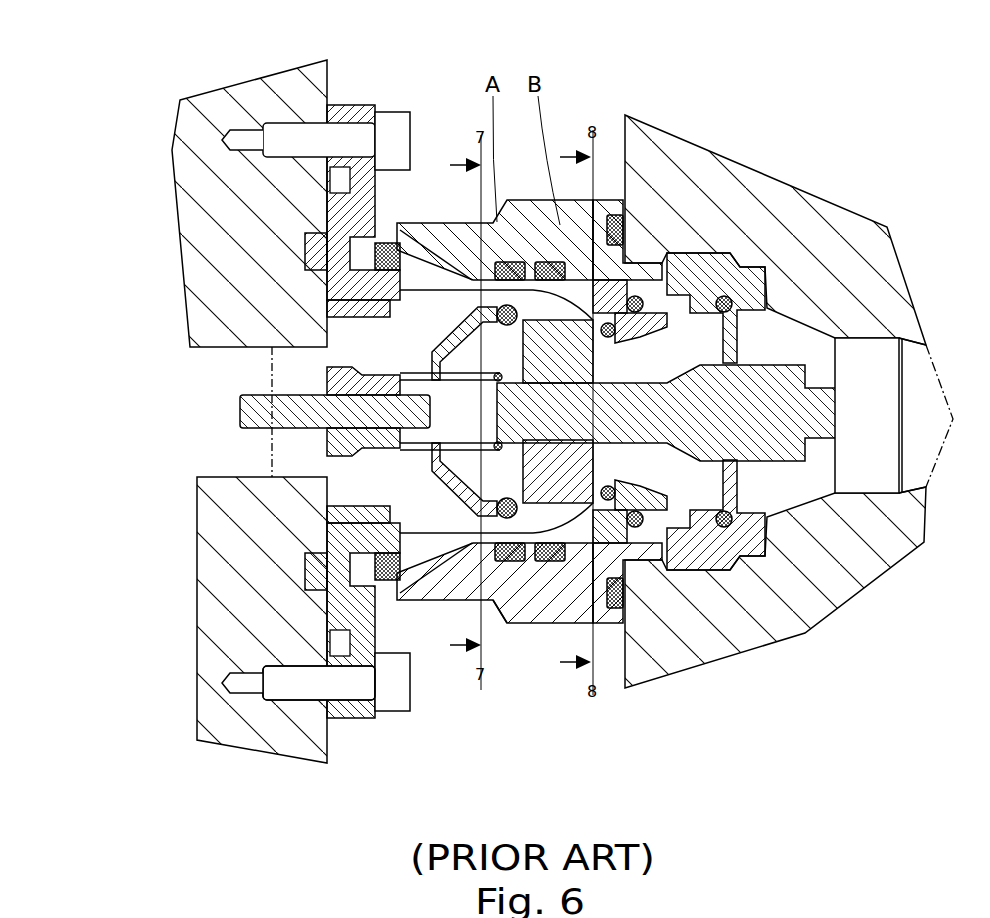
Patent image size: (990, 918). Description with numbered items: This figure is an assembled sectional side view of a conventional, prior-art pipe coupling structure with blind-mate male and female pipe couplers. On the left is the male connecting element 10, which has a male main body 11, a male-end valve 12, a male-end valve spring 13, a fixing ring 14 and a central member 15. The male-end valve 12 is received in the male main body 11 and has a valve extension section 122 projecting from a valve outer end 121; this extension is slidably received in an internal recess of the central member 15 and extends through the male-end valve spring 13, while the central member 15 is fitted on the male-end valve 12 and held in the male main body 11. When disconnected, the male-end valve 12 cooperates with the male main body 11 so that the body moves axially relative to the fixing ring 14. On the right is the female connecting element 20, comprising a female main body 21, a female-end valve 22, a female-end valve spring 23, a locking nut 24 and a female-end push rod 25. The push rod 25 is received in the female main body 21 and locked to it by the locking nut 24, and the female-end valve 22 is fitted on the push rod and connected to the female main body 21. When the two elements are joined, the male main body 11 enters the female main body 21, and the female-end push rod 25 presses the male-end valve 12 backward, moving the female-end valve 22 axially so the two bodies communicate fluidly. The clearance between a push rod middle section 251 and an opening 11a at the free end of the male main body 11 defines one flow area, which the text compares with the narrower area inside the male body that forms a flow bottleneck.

The male connecting element 10 is at (403, 738).
The male main body 11 is at (330, 197).
The opening 11a is at (538, 540).
The male-end valve 12 is at (445, 470).
The valve outer end 121 is at (505, 625).
The valve extension section 122 is at (300, 432).
The male-end valve spring 13 is at (410, 243).
The fixing ring 14 is at (346, 722).
The central member 15 is at (327, 517).
The female connecting element 20 is at (772, 740).
The female main body 21 is at (600, 235).
The female-end valve 22 is at (636, 530).
The female-end valve spring 23 is at (690, 525).
The locking nut 24 is at (902, 372).
The female-end push rod 25 is at (540, 585).
The push rod middle section 251 is at (678, 320).